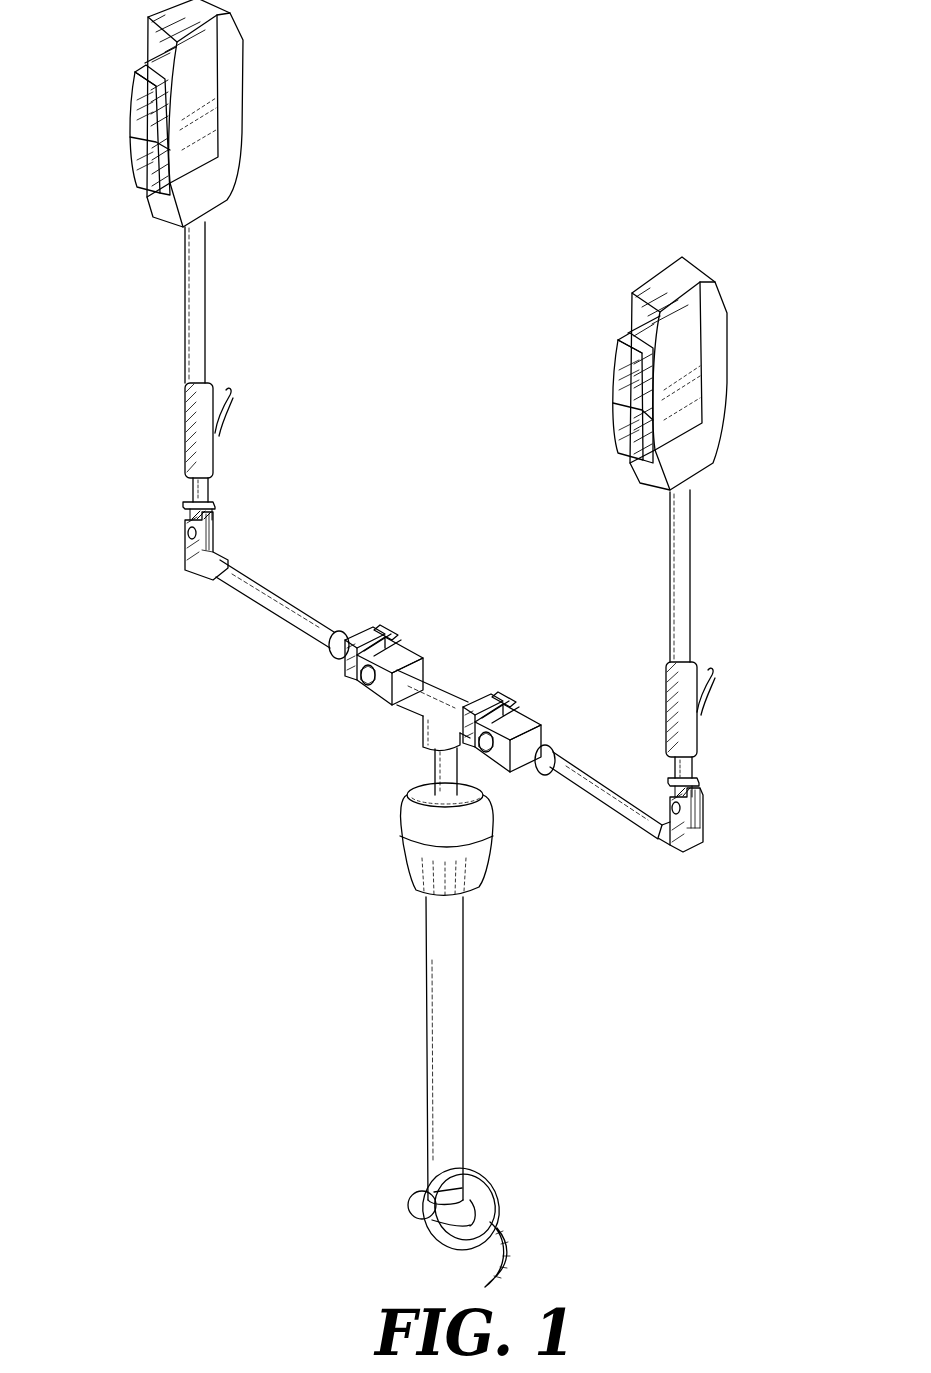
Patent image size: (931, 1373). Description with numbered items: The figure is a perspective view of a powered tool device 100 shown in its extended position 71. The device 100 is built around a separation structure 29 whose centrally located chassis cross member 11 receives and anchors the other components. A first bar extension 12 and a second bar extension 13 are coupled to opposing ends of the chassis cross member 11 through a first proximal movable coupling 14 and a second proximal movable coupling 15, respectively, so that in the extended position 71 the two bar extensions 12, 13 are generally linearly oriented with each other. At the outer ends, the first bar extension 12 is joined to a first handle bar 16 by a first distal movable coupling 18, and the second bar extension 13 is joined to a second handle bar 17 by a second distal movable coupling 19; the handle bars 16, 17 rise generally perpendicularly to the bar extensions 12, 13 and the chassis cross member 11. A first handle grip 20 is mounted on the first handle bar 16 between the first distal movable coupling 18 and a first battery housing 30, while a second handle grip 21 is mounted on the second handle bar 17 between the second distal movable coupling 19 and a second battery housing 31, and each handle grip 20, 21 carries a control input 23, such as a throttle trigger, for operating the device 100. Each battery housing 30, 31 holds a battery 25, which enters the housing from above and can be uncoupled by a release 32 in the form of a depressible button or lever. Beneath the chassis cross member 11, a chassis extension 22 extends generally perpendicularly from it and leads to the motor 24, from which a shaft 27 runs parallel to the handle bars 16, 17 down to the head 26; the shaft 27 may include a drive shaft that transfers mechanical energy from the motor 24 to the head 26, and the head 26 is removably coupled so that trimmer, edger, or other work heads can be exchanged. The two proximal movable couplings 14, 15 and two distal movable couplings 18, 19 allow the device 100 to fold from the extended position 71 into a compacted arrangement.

The powered tool device 100 is at (500, 185).
The extended position 71 is at (128, 352).
The second battery housing 31 is at (228, 52).
The first battery housing 30 is at (706, 332).
The release 32 is at (150, 102).
The battery 25 is at (190, 130).
The second handle bar 17 is at (200, 245).
The first handle bar 16 is at (684, 516).
The second handle grip 21 is at (197, 447).
The first handle grip 20 is at (676, 680).
The control input 23 is at (228, 398).
The second distal movable coupling 19 is at (210, 546).
The first distal movable coupling 18 is at (690, 858).
The second bar extension 13 is at (290, 606).
The first bar extension 12 is at (614, 800).
The chassis cross member 11 is at (440, 692).
The second proximal movable coupling 15 is at (392, 642).
The first proximal movable coupling 14 is at (516, 720).
The chassis extension 22 is at (440, 770).
The motor 24 is at (410, 862).
The shaft 27 is at (452, 1044).
The head 26 is at (480, 1198).
The separation structure 29 is at (190, 618).